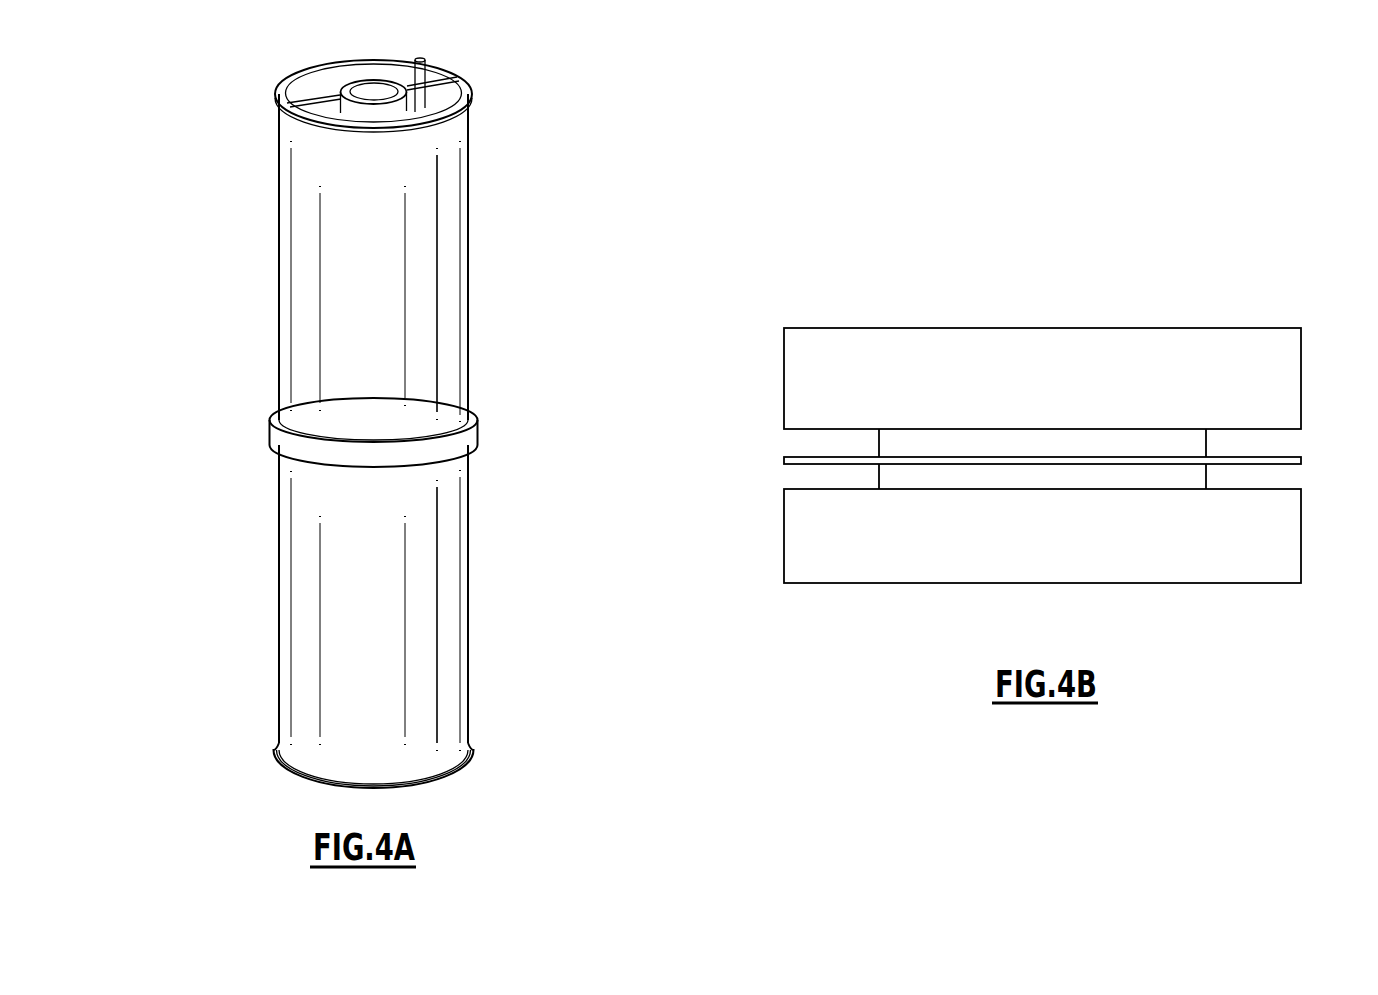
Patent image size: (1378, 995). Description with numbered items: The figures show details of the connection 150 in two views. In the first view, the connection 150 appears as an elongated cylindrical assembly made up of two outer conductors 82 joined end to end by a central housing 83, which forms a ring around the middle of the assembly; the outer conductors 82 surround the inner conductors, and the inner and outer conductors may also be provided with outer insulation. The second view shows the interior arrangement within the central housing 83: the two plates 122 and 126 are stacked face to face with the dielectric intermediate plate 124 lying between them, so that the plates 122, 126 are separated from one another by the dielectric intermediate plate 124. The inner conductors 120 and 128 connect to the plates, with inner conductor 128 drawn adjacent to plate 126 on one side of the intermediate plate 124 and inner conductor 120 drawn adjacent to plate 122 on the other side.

In FIG. 4A, the battery cell assembly 150 is at (148, 351).
In FIG. 4B, the battery cell assembly 150 is at (932, 220).
In FIG. 4A, the outer conductor 82 is at (285, 177).
In FIG. 4A, the central housing 83 is at (272, 441).
In FIG. 4A, the inner conductor 120 is at (370, 90).
In FIG. 4B, the inner conductor 120 is at (792, 543).
In FIG. 4B, the inner conductor 128 is at (792, 368).
In FIG. 4B, the dielectric intermediate plate 124 is at (784, 460).
In FIG. 4B, the plate 126 is at (1197, 447).
In FIG. 4B, the plate 122 is at (1197, 481).